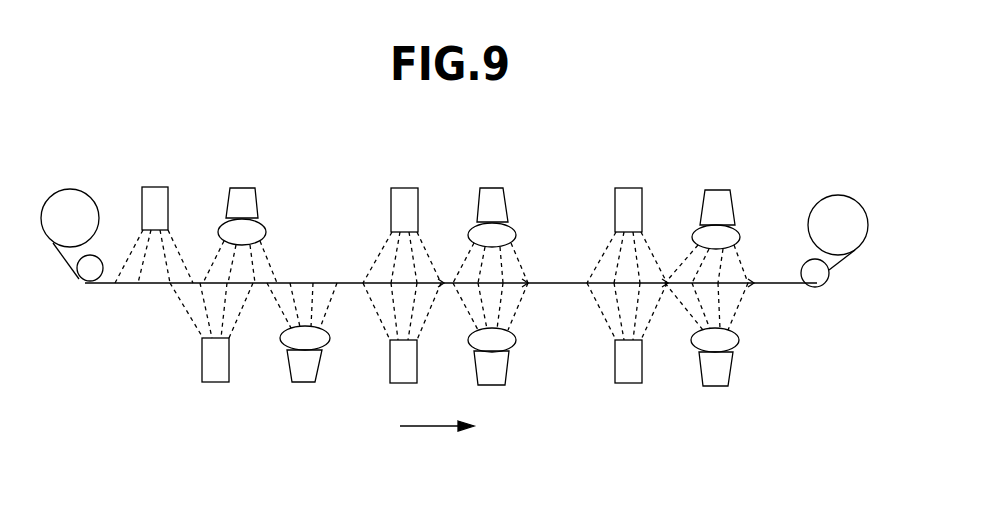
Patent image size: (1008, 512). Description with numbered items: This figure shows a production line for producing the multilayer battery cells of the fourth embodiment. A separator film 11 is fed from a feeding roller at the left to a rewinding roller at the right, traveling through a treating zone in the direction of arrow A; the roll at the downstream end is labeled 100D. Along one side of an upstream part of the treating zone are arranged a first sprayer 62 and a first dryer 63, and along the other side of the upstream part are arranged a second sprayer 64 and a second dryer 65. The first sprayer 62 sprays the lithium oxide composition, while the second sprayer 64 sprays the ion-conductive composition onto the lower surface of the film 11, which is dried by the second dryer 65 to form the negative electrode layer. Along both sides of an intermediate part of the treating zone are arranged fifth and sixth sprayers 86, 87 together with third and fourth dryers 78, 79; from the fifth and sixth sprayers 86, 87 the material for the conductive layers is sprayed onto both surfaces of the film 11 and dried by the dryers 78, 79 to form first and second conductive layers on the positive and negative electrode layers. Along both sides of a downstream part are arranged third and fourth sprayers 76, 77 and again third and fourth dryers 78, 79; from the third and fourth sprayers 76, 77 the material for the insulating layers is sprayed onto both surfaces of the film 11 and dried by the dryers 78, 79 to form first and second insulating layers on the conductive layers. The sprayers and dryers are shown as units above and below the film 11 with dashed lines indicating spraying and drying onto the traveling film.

The separator film 11 is at (63, 260).
The first sprayer 62 is at (157, 187).
The first dryer 63 is at (241, 188).
The second sprayer 64 is at (207, 382).
The second dryer 65 is at (310, 382).
The fifth sprayer 86 is at (405, 188).
The sixth sprayer 87 is at (395, 383).
The third sprayer 76 is at (630, 188).
The fourth sprayer 77 is at (623, 383).
The third dryer 78 is at (489, 188).
The fourth dryer 79 is at (502, 385).
The take-up roll of web 100D is at (830, 276).
The arrow A is at (430, 426).